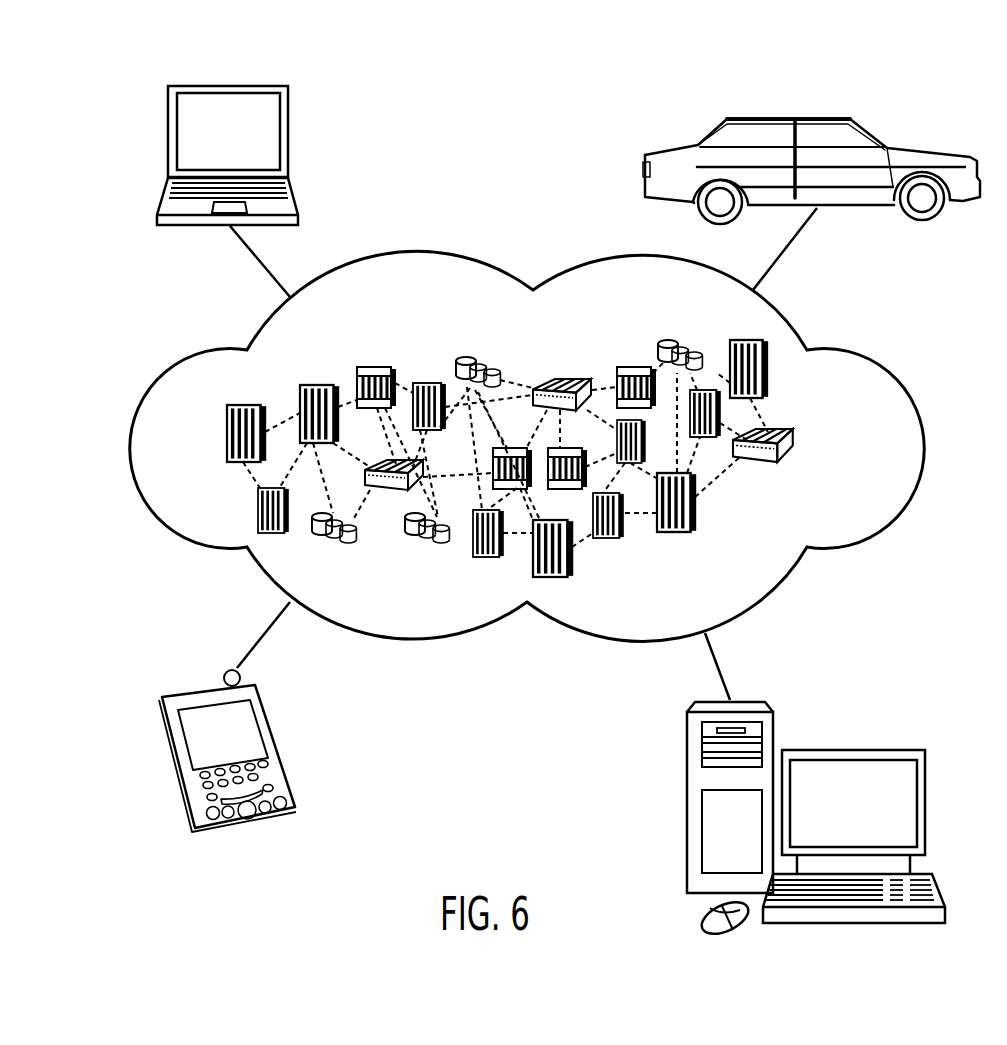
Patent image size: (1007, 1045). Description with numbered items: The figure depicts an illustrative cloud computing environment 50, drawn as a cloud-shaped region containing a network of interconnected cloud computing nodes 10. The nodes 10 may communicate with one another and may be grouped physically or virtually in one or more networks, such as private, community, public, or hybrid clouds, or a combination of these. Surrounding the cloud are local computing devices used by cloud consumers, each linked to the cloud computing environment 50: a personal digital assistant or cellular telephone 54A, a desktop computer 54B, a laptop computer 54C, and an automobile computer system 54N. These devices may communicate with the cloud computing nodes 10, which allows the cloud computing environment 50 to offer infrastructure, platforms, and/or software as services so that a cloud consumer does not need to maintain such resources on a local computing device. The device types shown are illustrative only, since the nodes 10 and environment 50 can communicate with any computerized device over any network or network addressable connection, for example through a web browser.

The cloud computing nodes 10 is at (810, 448).
The cloud computing environment 50 is at (865, 352).
The personal digital assistant or cellular telephone 54A is at (208, 688).
The desktop computer 54B is at (852, 750).
The laptop computer 54C is at (228, 83).
The automobile computer system 54N is at (788, 112).